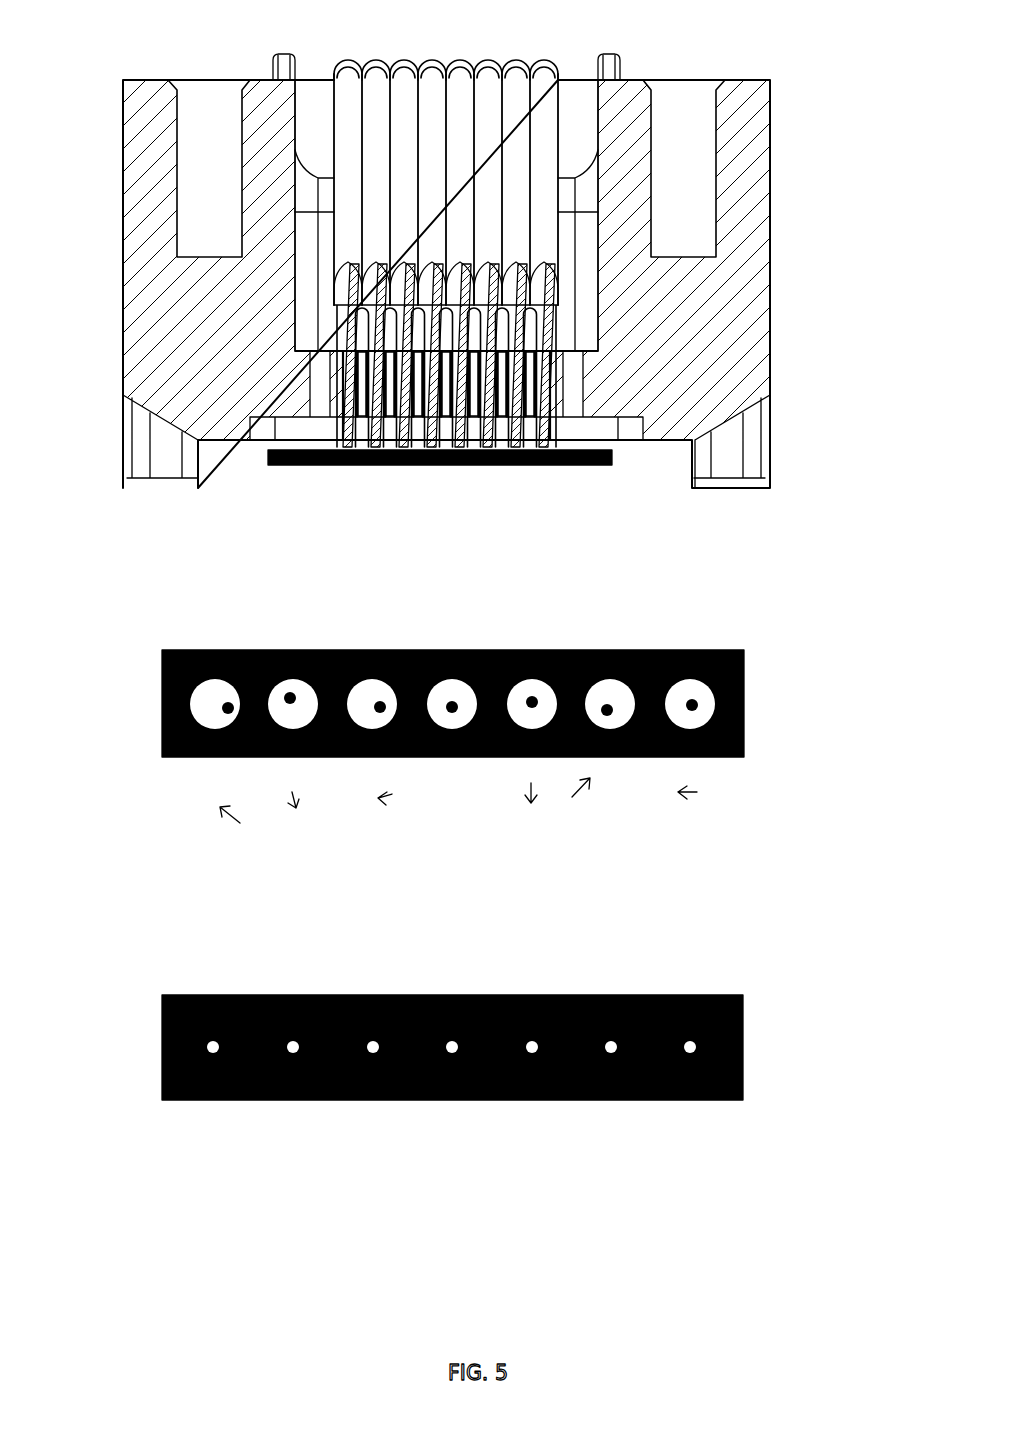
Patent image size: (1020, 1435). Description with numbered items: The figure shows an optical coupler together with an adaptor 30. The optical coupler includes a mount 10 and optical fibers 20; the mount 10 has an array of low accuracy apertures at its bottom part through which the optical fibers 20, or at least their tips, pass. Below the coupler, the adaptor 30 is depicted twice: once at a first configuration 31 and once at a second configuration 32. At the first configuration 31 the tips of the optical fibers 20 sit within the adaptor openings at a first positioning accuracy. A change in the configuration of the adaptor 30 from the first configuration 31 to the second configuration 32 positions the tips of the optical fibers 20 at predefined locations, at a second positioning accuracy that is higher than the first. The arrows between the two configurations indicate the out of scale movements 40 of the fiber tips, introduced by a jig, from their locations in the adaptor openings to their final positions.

The mount 10 is at (212, 201).
The optical fibers 20 is at (515, 58).
The adaptor 30 is at (612, 457).
The first configuration 31 is at (745, 730).
The second configuration 32 is at (745, 1065).
The movements 40 is at (558, 799).